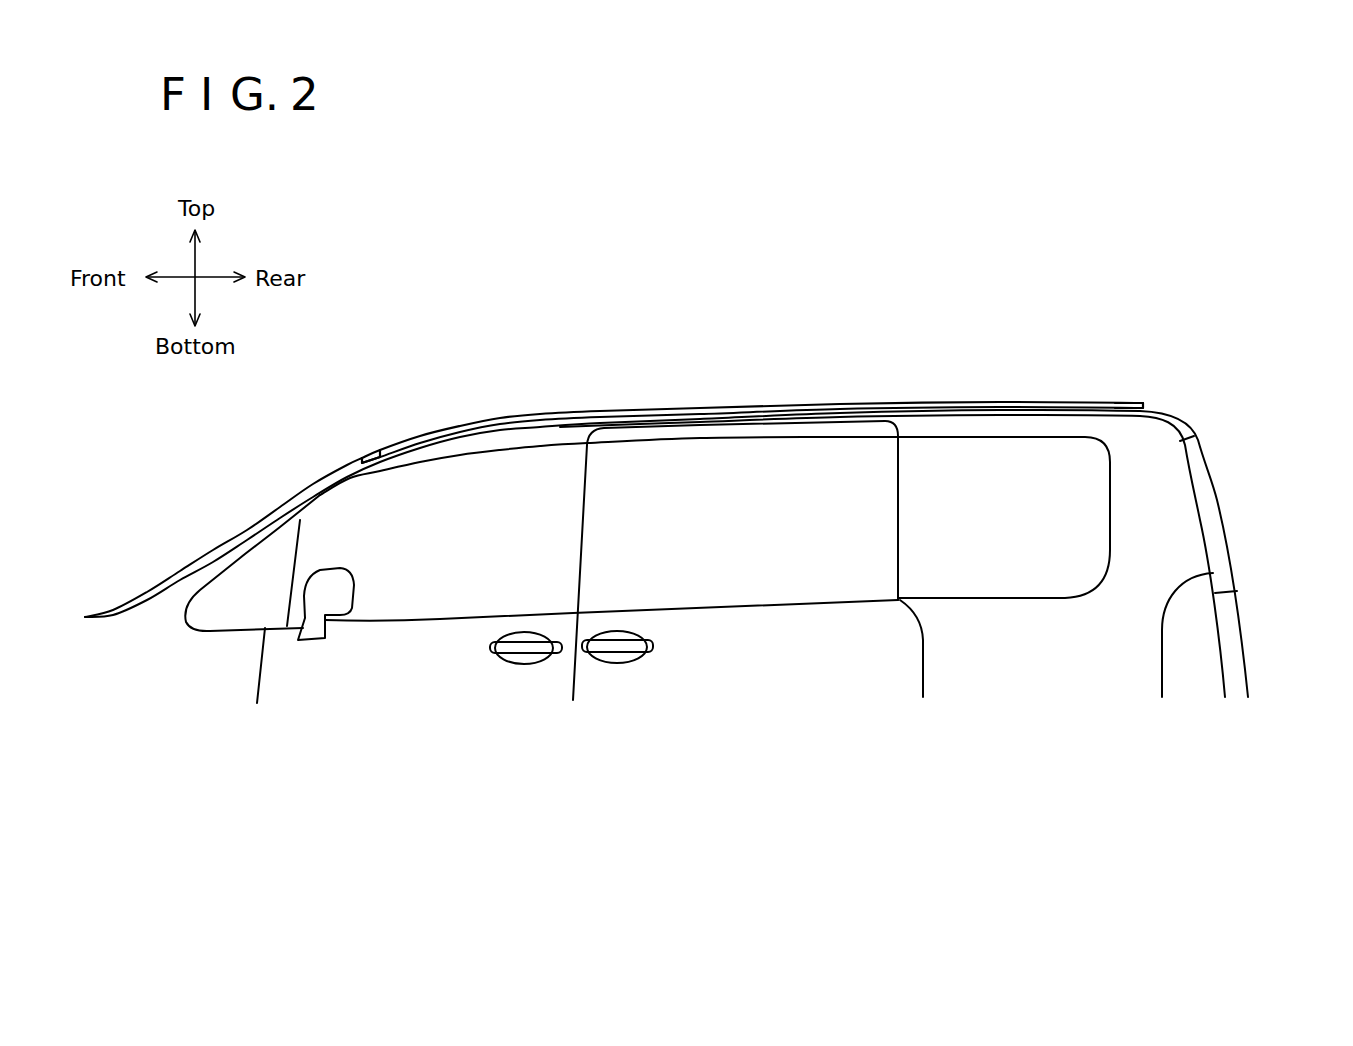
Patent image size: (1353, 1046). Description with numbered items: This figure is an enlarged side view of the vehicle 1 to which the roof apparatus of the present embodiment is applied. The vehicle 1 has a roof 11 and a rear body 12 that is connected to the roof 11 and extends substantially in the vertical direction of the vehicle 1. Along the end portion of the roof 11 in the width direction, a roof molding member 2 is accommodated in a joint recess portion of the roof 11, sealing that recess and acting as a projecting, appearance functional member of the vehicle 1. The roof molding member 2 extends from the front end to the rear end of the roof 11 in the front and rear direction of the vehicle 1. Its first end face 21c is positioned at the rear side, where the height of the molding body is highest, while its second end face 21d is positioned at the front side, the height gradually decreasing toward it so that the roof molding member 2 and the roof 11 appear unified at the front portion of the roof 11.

The vehicle 1 is at (830, 397).
The roof molding member 2 is at (1103, 400).
The roof 11 is at (652, 413).
The rear body 12 is at (1217, 498).
The first end face 21c is at (1147, 408).
The second end face 21d is at (362, 465).